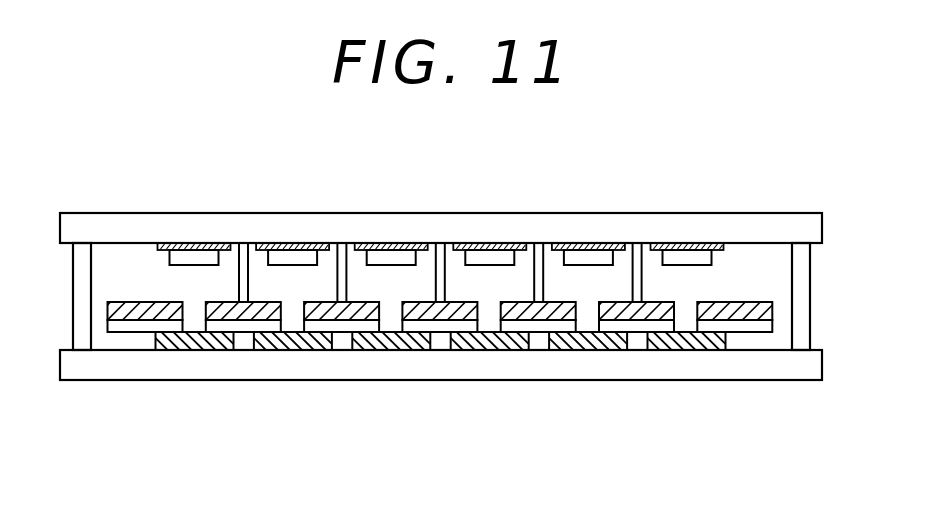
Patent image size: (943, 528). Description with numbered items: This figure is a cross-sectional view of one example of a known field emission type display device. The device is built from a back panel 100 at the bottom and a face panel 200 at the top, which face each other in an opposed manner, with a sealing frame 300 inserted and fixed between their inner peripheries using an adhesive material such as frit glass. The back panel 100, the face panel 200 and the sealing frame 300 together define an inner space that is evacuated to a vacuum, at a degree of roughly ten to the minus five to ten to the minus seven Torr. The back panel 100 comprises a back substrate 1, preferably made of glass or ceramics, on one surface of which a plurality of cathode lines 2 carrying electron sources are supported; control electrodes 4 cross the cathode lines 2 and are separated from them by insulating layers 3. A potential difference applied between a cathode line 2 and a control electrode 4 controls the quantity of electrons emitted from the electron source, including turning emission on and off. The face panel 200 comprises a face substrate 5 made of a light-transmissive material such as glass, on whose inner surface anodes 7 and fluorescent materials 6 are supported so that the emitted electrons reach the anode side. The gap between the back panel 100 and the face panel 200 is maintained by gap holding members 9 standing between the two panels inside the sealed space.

The back substrate 1 is at (147, 367).
The cathode line 2 is at (283, 340).
The insulating layer 3 is at (538, 338).
The control electrode 4 is at (745, 312).
The face substrate 5 is at (167, 216).
The fluorescent material 6 is at (582, 257).
The anode 7 is at (653, 248).
The gap holding member 9 is at (433, 263).
The back panel 100 is at (384, 391).
The face panel 200 is at (363, 192).
The sealing frame 300 is at (803, 250).